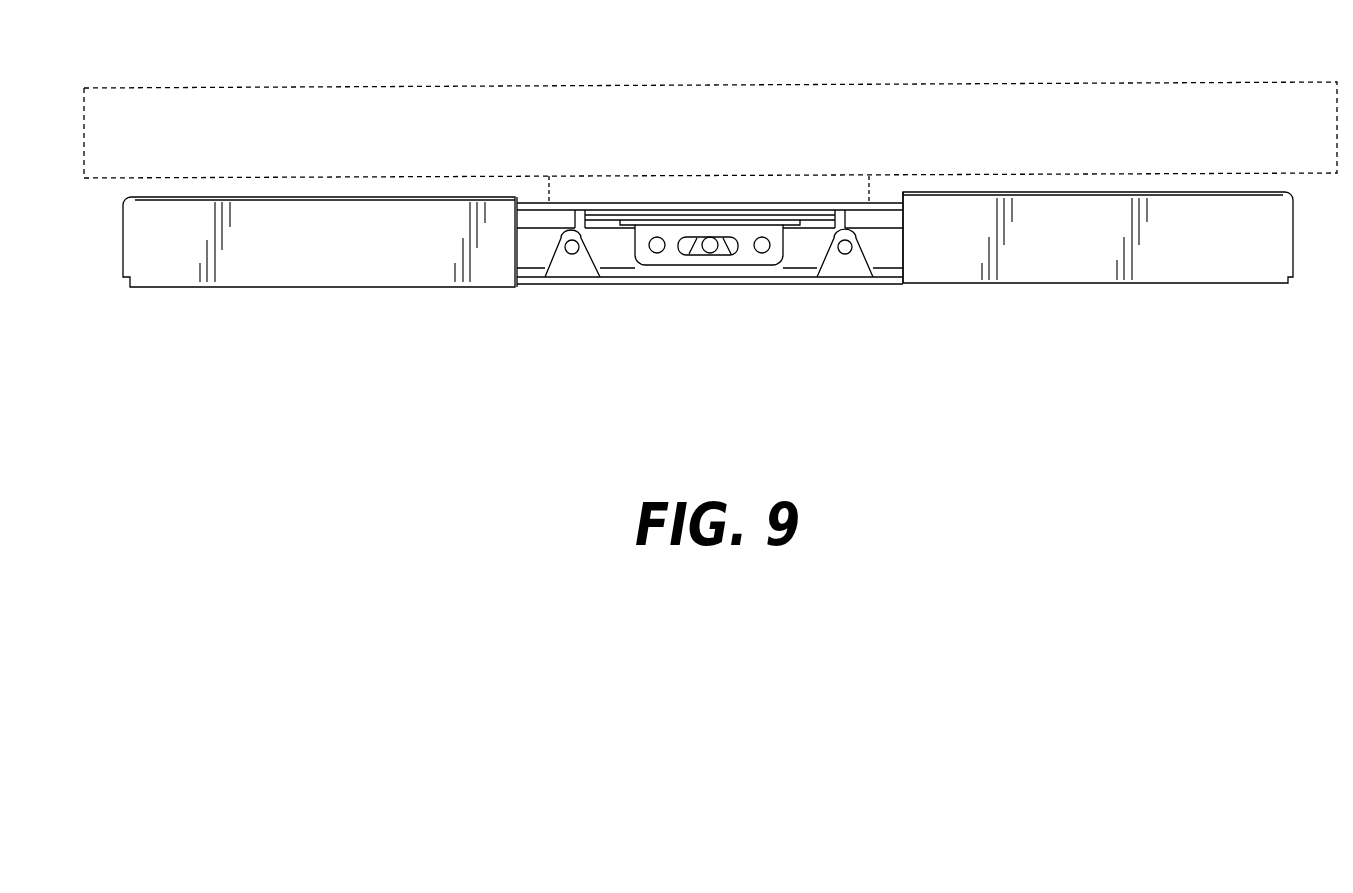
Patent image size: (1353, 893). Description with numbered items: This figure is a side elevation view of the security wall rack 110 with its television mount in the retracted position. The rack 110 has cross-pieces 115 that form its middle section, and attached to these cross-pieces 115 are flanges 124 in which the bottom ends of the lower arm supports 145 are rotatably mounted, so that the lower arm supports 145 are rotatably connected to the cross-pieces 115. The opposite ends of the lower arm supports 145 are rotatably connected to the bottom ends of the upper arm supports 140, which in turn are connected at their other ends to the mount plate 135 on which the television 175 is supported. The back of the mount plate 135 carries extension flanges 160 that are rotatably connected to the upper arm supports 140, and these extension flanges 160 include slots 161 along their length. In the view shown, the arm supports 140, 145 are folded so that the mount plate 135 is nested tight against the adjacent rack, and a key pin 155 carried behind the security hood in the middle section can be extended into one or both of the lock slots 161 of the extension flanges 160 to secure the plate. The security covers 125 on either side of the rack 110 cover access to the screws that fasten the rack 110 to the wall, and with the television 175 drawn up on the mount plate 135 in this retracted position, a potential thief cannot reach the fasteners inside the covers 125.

The security wall rack 110 is at (736, 171).
The cross-pieces 115 is at (578, 288).
The flanges 124 is at (560, 265).
The security covers 125 is at (367, 258).
The mount plate 135 is at (873, 203).
The upper arm supports 140 is at (606, 242).
The lower arm supports 145 is at (536, 243).
The key pin 155 is at (713, 258).
The extension flanges 160 is at (753, 260).
The slots 161 is at (676, 252).
The television 175 is at (1228, 82).